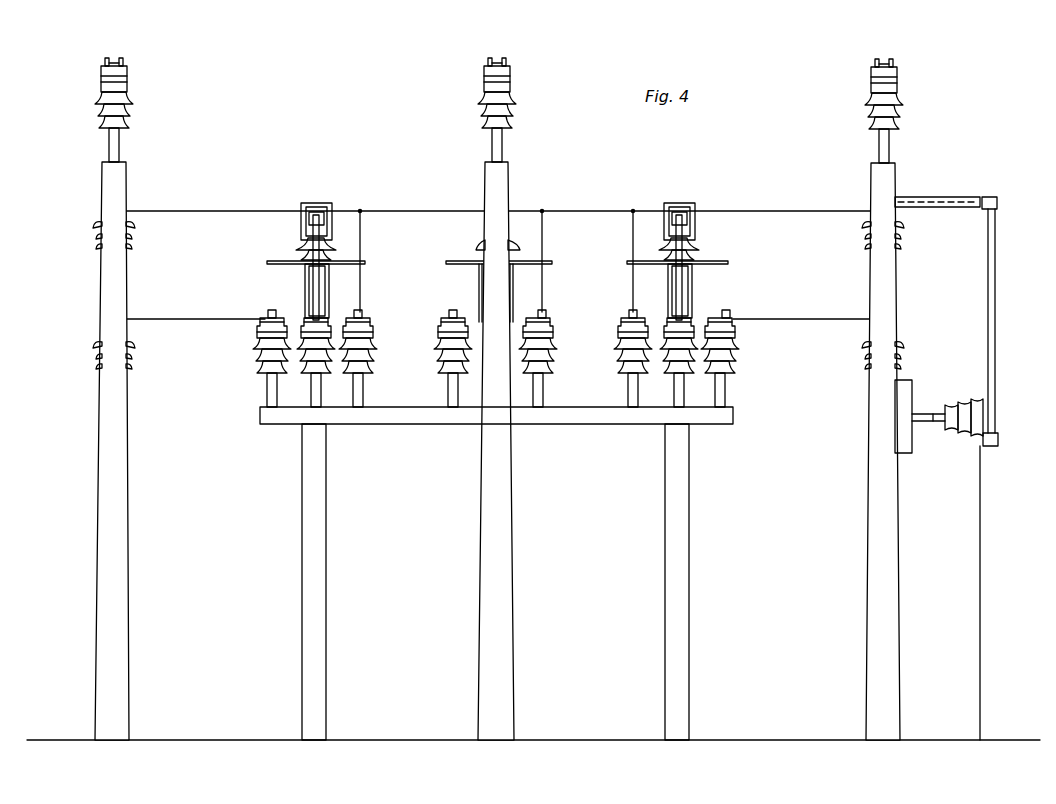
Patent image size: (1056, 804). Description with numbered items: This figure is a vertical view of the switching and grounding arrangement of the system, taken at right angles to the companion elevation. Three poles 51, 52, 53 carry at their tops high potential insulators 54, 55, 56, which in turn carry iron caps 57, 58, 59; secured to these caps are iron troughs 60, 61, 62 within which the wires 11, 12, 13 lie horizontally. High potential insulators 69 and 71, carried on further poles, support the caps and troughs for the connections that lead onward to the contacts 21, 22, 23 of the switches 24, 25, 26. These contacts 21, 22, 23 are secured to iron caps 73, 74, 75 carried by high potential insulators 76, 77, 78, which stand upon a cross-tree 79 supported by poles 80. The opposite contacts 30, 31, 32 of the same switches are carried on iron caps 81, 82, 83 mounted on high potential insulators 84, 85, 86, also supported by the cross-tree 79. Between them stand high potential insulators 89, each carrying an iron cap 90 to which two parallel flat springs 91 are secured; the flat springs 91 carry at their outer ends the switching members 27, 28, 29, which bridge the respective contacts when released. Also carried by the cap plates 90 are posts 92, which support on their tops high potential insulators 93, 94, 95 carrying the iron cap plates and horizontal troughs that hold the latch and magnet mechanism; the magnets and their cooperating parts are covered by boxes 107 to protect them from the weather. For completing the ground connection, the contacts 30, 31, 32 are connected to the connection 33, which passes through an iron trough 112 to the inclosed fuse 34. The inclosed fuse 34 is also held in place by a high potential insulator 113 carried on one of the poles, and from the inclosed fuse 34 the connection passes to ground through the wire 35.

The wire 11 is at (118, 66).
The wire 12 is at (501, 66).
The wire 13 is at (889, 66).
The contact 21 is at (266, 311).
The contact 22 is at (448, 311).
The contact 23 is at (731, 312).
The switch 24 is at (300, 247).
The switch 25 is at (476, 250).
The switch 26 is at (697, 250).
The switching member 27 is at (285, 261).
The switching member 28 is at (450, 264).
The switching member 29 is at (722, 264).
The contact 30 is at (366, 314).
The contact 31 is at (544, 312).
The contact 32 is at (630, 312).
The connection 33 is at (204, 209).
The inclosed fuse 34 is at (996, 360).
The wire 35 is at (982, 582).
The pole 51 is at (126, 592).
The pole 52 is at (508, 578).
The pole 53 is at (896, 548).
The high potential insulator 54 is at (138, 109).
The high potential insulator 55 is at (519, 110).
The high potential insulator 56 is at (906, 111).
The iron cap 57 is at (128, 78).
The iron cap 58 is at (511, 79).
The iron cap 59 is at (897, 80).
The iron trough 60 is at (106, 68).
The iron trough 61 is at (489, 68).
The iron trough 62 is at (876, 68).
The high potential insulator 69 is at (100, 345).
The high potential insulator 71 is at (870, 345).
The iron cap 73 is at (258, 326).
The iron cap 74 is at (440, 326).
The iron cap 75 is at (736, 326).
The high potential insulator 76 is at (245, 346).
The high potential insulator 77 is at (433, 347).
The high potential insulator 78 is at (744, 355).
The cross-tree 79 is at (712, 424).
The pole 80 is at (302, 552).
The iron cap 81 is at (374, 336).
The iron cap 82 is at (552, 326).
The iron cap 83 is at (618, 336).
The high potential insulator 84 is at (369, 358).
The high potential insulator 85 is at (555, 358).
The high potential insulator 86 is at (619, 359).
The high potential insulator 89 is at (487, 344).
The iron cap 90 is at (304, 322).
The flat spring 91 is at (305, 268).
The post 92 is at (320, 300).
The high potential insulator 93 is at (305, 208).
The high potential insulator 94 is at (516, 240).
The high potential insulator 95 is at (695, 249).
The box 107 is at (326, 243).
The iron trough 112 is at (932, 196).
The high potential insulator 113 is at (963, 436).